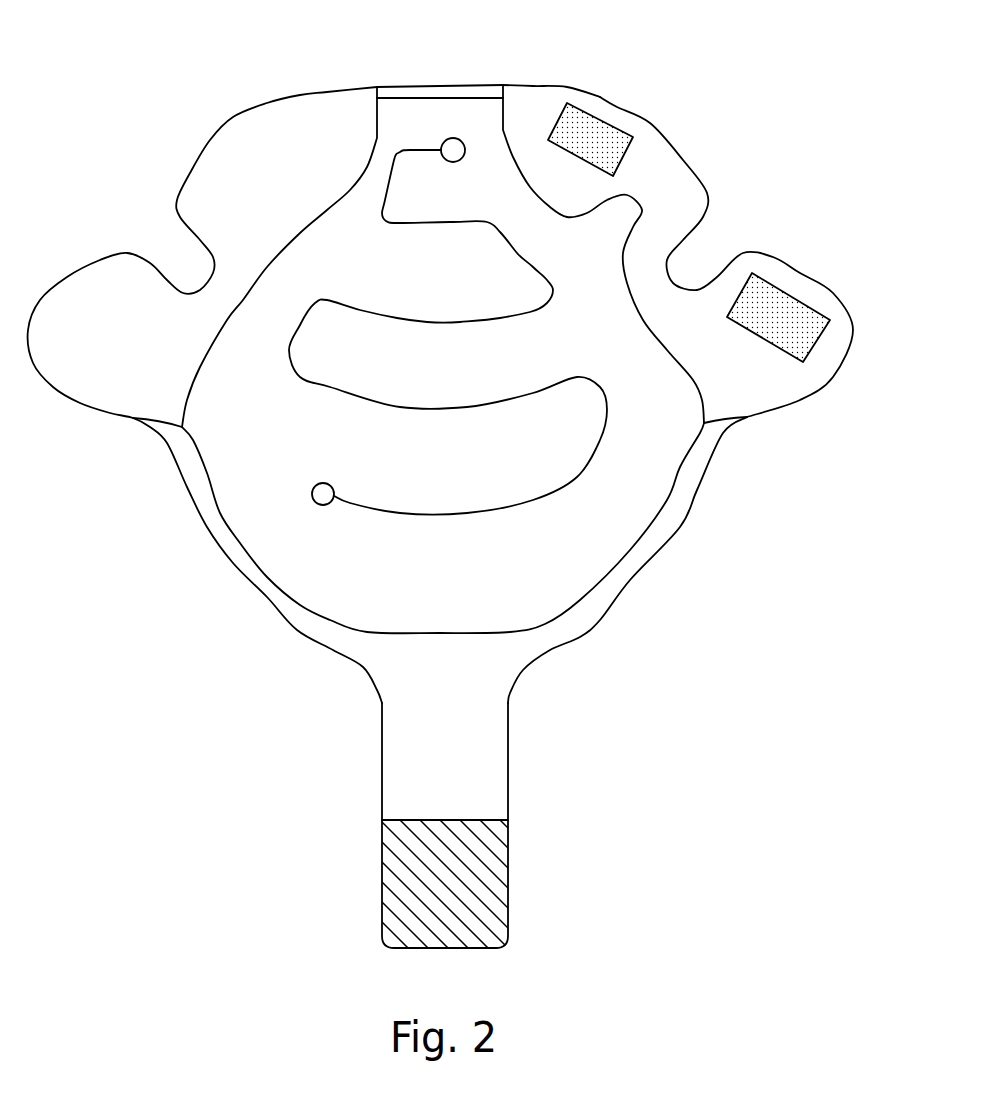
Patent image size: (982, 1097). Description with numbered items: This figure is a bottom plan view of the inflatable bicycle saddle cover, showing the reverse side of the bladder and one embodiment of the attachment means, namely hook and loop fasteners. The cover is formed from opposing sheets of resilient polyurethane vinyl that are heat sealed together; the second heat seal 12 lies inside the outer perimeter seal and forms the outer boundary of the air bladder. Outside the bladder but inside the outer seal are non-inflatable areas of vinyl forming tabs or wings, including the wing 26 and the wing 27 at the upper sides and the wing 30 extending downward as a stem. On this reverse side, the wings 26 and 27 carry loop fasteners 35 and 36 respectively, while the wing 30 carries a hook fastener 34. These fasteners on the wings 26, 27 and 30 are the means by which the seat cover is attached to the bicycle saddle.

The second heat seal 12 is at (413, 104).
The wing 27 is at (527, 120).
The loop fastener 36 is at (604, 134).
The loop fastener 35 is at (780, 312).
The wing 26 is at (775, 390).
The wing 30 is at (468, 755).
The hook fastener 34 is at (470, 863).